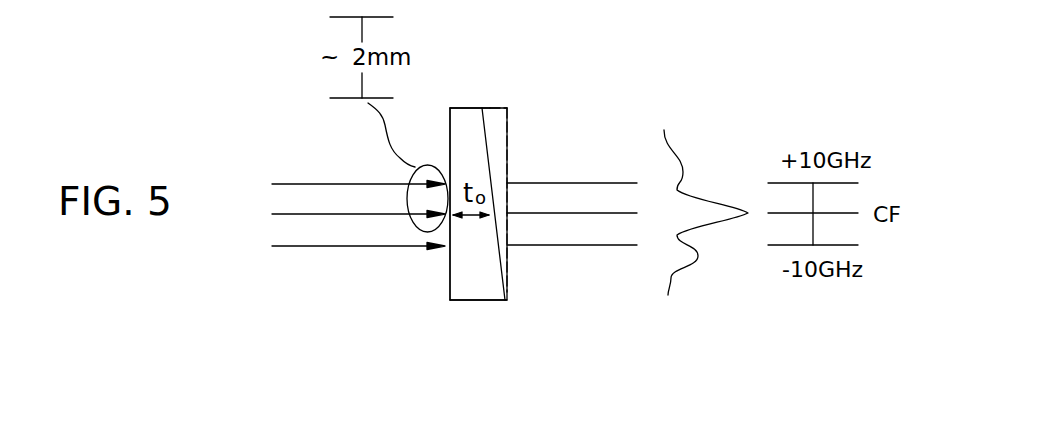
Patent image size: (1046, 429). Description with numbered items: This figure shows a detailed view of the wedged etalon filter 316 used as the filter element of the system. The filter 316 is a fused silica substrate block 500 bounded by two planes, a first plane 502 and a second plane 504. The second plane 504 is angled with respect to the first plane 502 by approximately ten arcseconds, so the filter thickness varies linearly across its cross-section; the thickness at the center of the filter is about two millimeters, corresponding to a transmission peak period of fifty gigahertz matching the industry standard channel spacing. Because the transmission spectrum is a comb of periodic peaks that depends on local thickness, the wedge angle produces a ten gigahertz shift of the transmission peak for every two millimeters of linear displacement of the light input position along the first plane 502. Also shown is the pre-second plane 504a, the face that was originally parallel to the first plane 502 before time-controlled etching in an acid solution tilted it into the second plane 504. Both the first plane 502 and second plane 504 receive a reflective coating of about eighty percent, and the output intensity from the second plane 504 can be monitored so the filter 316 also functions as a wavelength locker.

The wedged etalon filter 316 is at (473, 300).
The fused silica substrate block 500 is at (497, 288).
The first plane 502 is at (450, 280).
The second plane 504 is at (487, 137).
The pre-second plane 504a is at (507, 152).